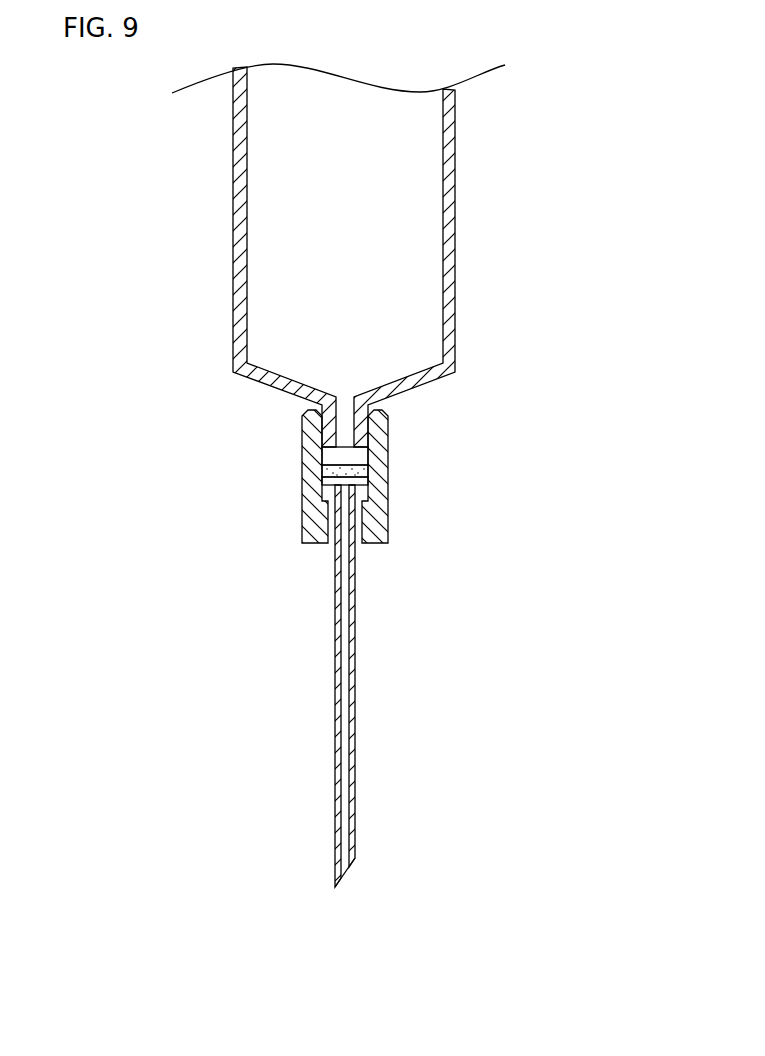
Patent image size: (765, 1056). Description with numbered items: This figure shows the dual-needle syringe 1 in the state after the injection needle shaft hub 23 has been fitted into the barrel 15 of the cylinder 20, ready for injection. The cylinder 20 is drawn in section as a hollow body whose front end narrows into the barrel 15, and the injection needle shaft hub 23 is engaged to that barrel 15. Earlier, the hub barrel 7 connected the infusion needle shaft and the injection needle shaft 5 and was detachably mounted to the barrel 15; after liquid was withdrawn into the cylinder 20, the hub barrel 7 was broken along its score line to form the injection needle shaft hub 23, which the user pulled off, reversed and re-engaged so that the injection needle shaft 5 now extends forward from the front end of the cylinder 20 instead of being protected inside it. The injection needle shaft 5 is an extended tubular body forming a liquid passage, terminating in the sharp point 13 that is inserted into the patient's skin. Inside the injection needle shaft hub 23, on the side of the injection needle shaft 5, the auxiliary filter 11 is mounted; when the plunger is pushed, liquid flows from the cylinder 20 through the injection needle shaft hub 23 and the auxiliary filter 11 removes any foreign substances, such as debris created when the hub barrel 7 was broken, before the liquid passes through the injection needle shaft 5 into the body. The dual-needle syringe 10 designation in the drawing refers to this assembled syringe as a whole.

The drug delivery device 10 is at (538, 178).
The cylinder 20 is at (233, 197).
The auxiliary filter 11 is at (345, 462).
The hub barrel 7 is at (298, 488).
The barrel 15 is at (388, 432).
The injection needle shaft hub 23 is at (388, 473).
The dual-needle syringe 1 is at (240, 592).
The injection needle shaft 5 is at (355, 663).
The sharp point 13 is at (334, 887).